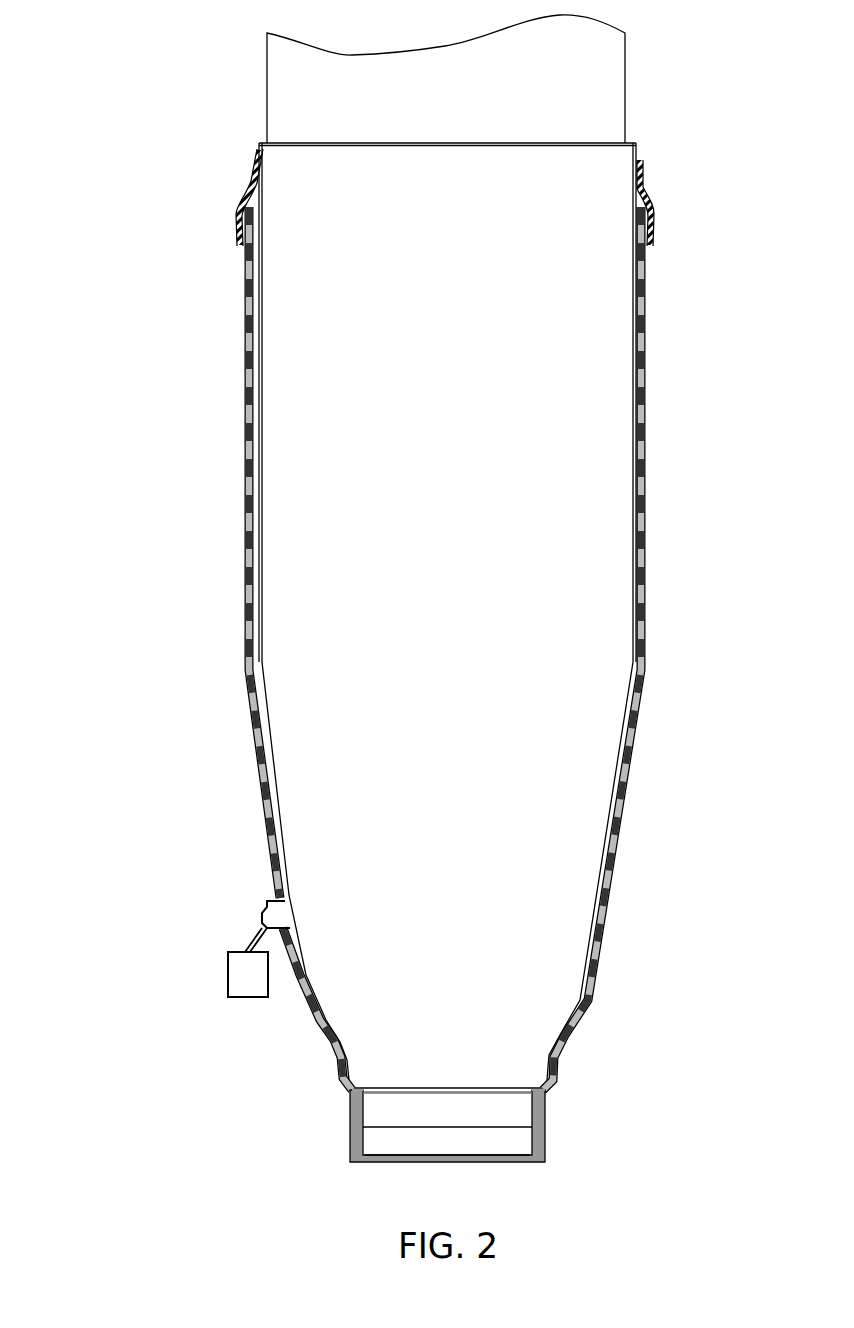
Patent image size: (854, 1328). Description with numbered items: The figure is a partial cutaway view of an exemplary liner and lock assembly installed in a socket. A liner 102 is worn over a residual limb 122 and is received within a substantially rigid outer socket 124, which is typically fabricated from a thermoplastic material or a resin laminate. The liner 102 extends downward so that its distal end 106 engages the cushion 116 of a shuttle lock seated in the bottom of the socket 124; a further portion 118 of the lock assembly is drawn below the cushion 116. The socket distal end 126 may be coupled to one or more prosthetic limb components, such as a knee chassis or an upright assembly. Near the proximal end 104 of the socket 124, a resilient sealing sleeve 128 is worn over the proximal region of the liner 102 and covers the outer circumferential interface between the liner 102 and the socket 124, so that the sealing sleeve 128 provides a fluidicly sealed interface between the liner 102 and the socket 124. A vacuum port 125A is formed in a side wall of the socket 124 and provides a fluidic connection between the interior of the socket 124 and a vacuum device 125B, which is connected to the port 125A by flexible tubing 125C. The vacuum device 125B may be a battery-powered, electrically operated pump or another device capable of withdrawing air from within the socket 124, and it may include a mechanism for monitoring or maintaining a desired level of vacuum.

The residual limb 122 is at (282, 60).
The proximal end of the socket 104 is at (590, 143).
The resilient sealing sleeve 128 is at (253, 178).
The outer socket 124 is at (249, 440).
The liner 102 is at (285, 565).
The vacuum port 125A is at (280, 915).
The flexible tubing 125C is at (253, 937).
The vacuum device 125B is at (242, 985).
The distal end of the liner 106 is at (410, 1098).
The cushion 116 is at (515, 1107).
The distal attachment lower portion 118 is at (500, 1147).
The socket distal end 126 is at (430, 1164).